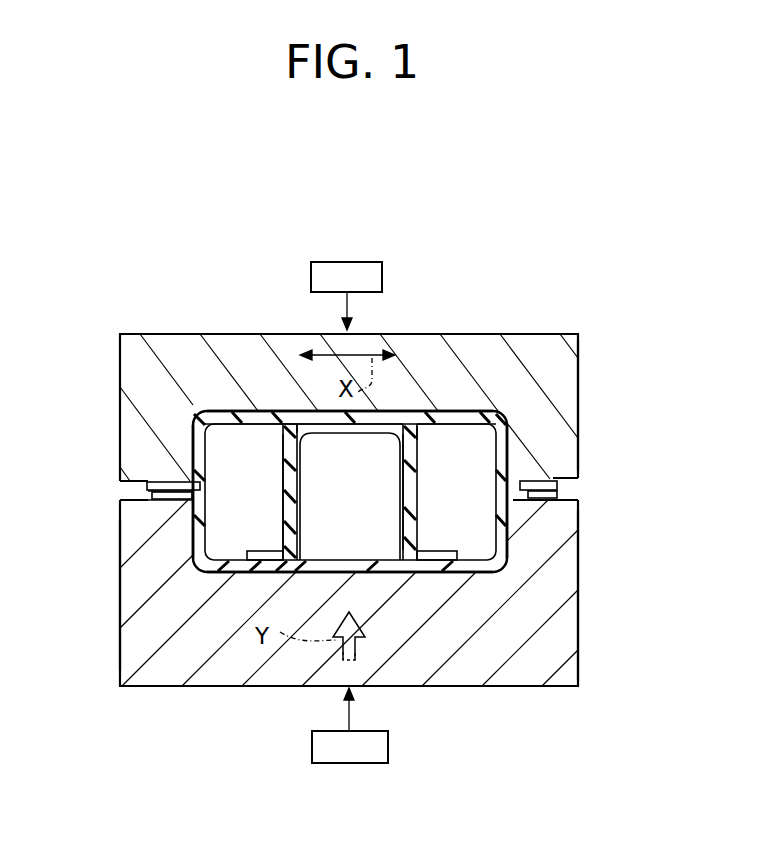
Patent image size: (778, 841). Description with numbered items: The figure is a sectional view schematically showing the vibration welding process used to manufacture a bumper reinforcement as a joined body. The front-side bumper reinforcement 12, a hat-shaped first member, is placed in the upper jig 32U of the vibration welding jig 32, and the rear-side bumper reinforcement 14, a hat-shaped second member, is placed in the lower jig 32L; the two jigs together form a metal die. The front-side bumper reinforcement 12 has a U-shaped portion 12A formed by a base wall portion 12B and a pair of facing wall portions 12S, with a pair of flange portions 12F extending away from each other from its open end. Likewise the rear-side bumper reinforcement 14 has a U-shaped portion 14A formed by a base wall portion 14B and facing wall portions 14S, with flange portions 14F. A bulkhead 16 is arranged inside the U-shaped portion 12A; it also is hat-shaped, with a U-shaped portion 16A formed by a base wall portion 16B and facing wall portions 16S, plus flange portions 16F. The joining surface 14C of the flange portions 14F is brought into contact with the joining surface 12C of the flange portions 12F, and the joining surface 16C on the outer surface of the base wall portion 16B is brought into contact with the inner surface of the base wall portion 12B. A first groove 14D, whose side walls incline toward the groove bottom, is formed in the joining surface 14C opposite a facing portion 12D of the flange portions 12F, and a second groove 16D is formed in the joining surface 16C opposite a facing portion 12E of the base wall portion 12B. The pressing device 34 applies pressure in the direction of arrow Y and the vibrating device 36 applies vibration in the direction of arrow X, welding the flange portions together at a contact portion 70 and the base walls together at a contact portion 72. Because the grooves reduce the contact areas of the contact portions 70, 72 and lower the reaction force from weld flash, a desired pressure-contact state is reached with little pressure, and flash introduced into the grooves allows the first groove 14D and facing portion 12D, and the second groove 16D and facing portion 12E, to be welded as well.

The front-side bumper reinforcement 12 is at (522, 410).
The U-shaped portion 12A is at (577, 340).
The base wall portion 12B is at (216, 412).
The joining surface 12C is at (204, 496).
The facing portion 12D is at (192, 508).
The facing portion 12E is at (346, 436).
The flange portions 12F is at (170, 481).
The facing wall portions 12S is at (190, 470).
The rear-side bumper reinforcement 14 is at (489, 575).
The U-shaped portion 14A is at (558, 580).
The base wall portion 14B is at (385, 576).
The joining surface 14C is at (169, 480).
The first groove 14D is at (178, 480).
The flange portions 14F is at (153, 503).
The facing wall portions 14S is at (192, 545).
The bulkhead 16 is at (430, 548).
The U-shaped portion 16A is at (417, 453).
The base wall portion 16B is at (395, 416).
The joining surface 16C is at (290, 411).
The second groove 16D is at (325, 411).
The flange portions 16F is at (265, 550).
The facing wall portions 16S is at (285, 455).
The vibration welding jig 32 is at (80, 657).
The upper jig 32U is at (578, 397).
The lower jig 32L is at (578, 633).
The pressing device 34 is at (375, 764).
The vibrating device 36 is at (358, 261).
The contact portion 70 is at (158, 490).
The contact portion 72 is at (262, 411).